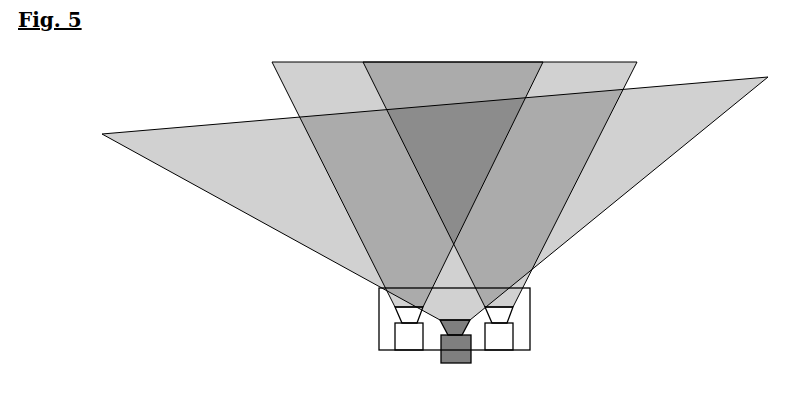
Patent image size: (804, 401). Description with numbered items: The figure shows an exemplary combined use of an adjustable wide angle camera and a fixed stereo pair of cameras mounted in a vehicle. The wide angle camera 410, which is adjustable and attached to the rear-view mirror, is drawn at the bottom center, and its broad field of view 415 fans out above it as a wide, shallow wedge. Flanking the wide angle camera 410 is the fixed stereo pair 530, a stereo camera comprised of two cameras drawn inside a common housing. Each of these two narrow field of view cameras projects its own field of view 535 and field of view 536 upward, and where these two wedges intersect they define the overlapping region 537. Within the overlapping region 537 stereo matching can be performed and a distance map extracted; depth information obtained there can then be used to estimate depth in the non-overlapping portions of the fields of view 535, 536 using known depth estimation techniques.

The wide angle camera 410 is at (473, 353).
The field of view 415 is at (435, 198).
The stereo pair 530 is at (387, 337).
The field of view 535 is at (407, 184).
The field of view 536 is at (500, 184).
The overlapping region 537 is at (453, 152).